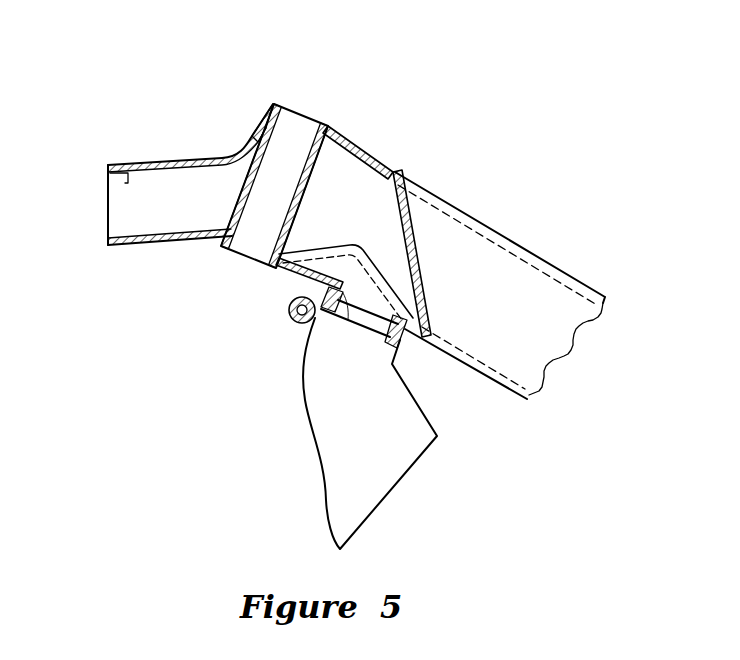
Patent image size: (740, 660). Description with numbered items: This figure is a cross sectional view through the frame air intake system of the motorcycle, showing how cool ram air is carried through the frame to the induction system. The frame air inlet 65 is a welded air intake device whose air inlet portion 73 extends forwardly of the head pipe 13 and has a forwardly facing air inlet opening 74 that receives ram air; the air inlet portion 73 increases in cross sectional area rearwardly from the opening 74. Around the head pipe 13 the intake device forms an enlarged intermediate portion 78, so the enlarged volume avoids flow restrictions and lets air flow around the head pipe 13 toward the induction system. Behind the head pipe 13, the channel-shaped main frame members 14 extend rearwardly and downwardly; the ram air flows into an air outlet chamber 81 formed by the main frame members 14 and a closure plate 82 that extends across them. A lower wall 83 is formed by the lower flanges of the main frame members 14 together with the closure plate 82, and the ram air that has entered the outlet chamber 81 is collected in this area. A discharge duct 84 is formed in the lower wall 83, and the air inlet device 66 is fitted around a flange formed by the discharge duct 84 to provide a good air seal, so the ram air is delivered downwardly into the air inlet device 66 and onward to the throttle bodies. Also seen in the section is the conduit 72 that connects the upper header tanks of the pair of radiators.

The head pipe 13 is at (318, 103).
The main frame members 14 is at (521, 247).
The frame air inlet 65 is at (208, 100).
The air inlet device 66 is at (310, 421).
The conduit 72 is at (290, 316).
The air inlet portion 73 is at (170, 155).
The air inlet opening 74 is at (128, 180).
The enlarged intermediate portion 78 is at (257, 121).
The air outlet chamber 81 is at (335, 163).
The closure plate 82 is at (408, 208).
The lower wall 83 is at (344, 250).
The discharge duct 84 is at (346, 303).